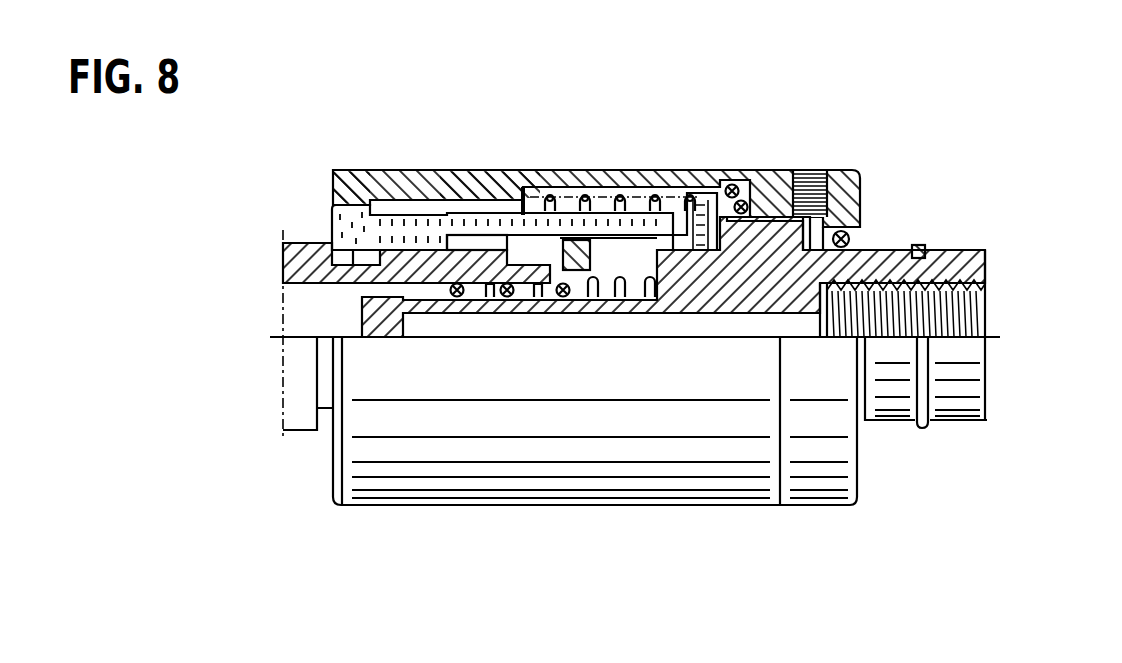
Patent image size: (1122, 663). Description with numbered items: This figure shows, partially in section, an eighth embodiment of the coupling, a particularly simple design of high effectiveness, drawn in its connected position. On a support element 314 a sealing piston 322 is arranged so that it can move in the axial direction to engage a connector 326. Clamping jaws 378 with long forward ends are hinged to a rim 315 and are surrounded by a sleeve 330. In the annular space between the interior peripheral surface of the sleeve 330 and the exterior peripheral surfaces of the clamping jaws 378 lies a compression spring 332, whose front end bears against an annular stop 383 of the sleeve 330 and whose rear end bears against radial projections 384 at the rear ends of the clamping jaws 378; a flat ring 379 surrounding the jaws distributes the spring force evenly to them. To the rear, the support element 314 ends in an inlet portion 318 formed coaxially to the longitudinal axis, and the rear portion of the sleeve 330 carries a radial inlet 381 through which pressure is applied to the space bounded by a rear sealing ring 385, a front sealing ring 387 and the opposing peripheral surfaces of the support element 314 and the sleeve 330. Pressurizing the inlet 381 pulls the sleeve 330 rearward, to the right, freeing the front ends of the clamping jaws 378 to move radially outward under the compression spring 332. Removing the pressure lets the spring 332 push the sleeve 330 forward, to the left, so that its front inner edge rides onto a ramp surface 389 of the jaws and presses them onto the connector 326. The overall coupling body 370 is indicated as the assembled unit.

The support element 314 is at (702, 298).
The rim 315 is at (674, 188).
The inlet portion 318 is at (950, 307).
The sealing piston 322 is at (532, 285).
The connector 326 is at (283, 262).
The sleeve 330 is at (427, 170).
The compression spring 332 is at (583, 170).
The tool body 370 is at (413, 522).
The clamping jaws 378 is at (330, 212).
The flat ring 379 is at (696, 192).
The radial inlet 381 is at (813, 171).
The annular stop 383 is at (493, 170).
The radial projections 384 is at (707, 190).
The rear sealing ring 385 is at (858, 238).
The front sealing ring 387 is at (750, 183).
The ramp surface 389 is at (380, 168).